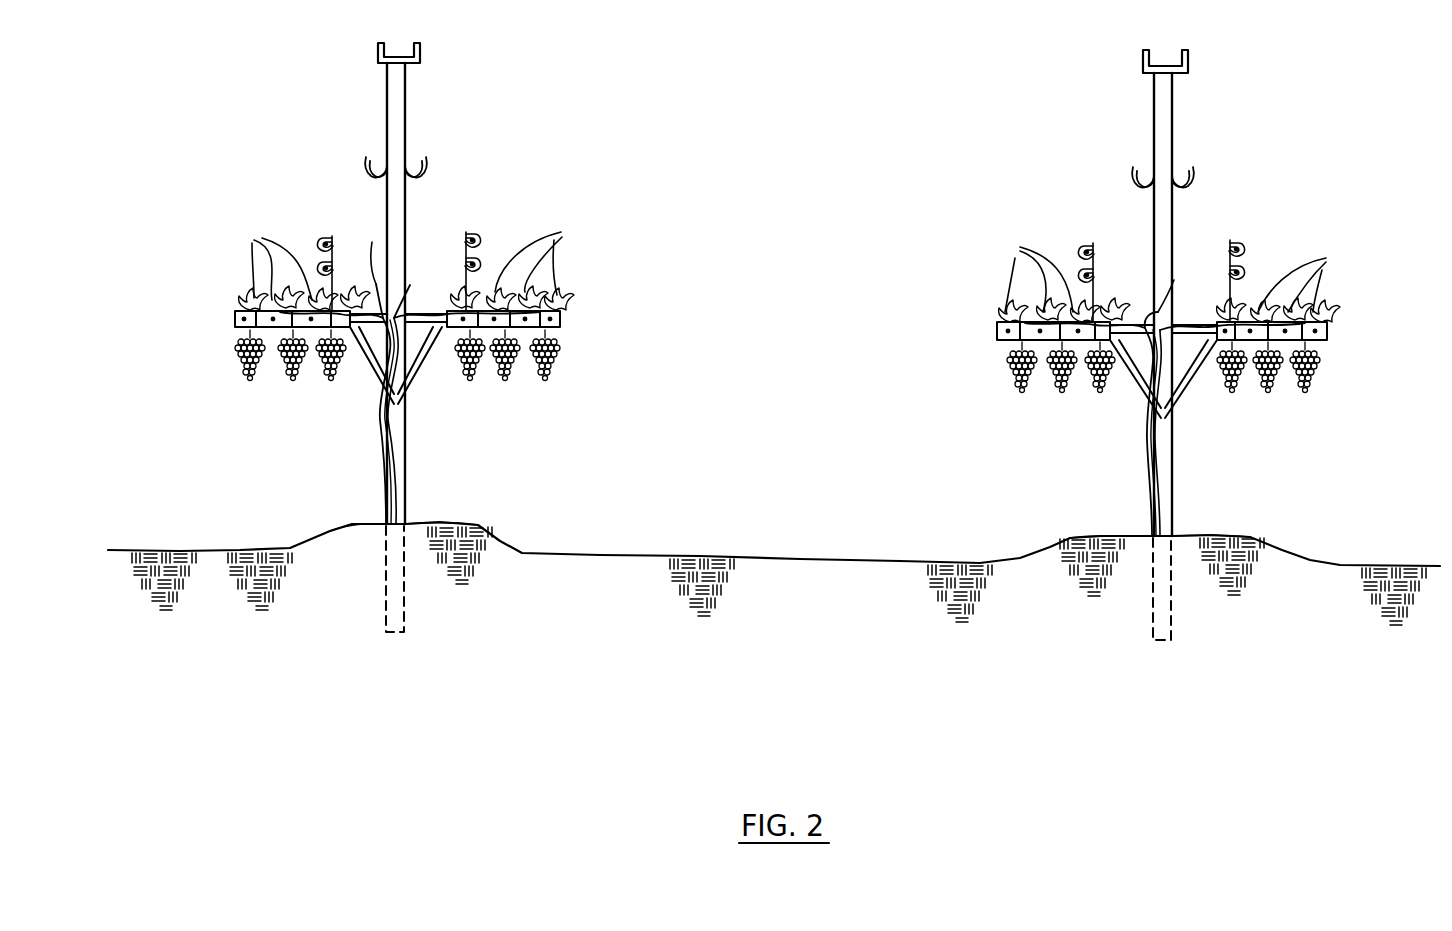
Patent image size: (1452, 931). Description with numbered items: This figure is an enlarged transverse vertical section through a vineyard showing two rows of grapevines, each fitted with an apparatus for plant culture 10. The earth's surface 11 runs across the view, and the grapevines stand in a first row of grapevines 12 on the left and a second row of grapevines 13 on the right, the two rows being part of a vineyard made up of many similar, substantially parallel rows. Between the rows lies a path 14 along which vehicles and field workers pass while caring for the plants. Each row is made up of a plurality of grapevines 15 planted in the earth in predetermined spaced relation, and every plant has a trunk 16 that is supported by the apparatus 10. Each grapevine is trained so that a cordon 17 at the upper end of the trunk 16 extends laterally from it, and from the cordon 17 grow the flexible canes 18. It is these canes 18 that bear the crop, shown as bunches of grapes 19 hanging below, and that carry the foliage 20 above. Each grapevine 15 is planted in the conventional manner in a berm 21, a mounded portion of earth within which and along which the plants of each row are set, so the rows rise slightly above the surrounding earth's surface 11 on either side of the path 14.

The apparatus for plant culture 10 is at (377, 123).
The earth's surface 11 is at (611, 545).
The first row of grapevines 12 is at (378, 427).
The second row of grapevines 13 is at (1178, 452).
The path 14 is at (735, 562).
The grapevines 15 is at (389, 482).
The trunk 16 is at (394, 442).
The cordon 17 is at (403, 305).
The canes 18 is at (385, 310).
The bunches of grapes 19 is at (250, 380).
The foliage 20 is at (254, 240).
The berm 21 is at (438, 526).